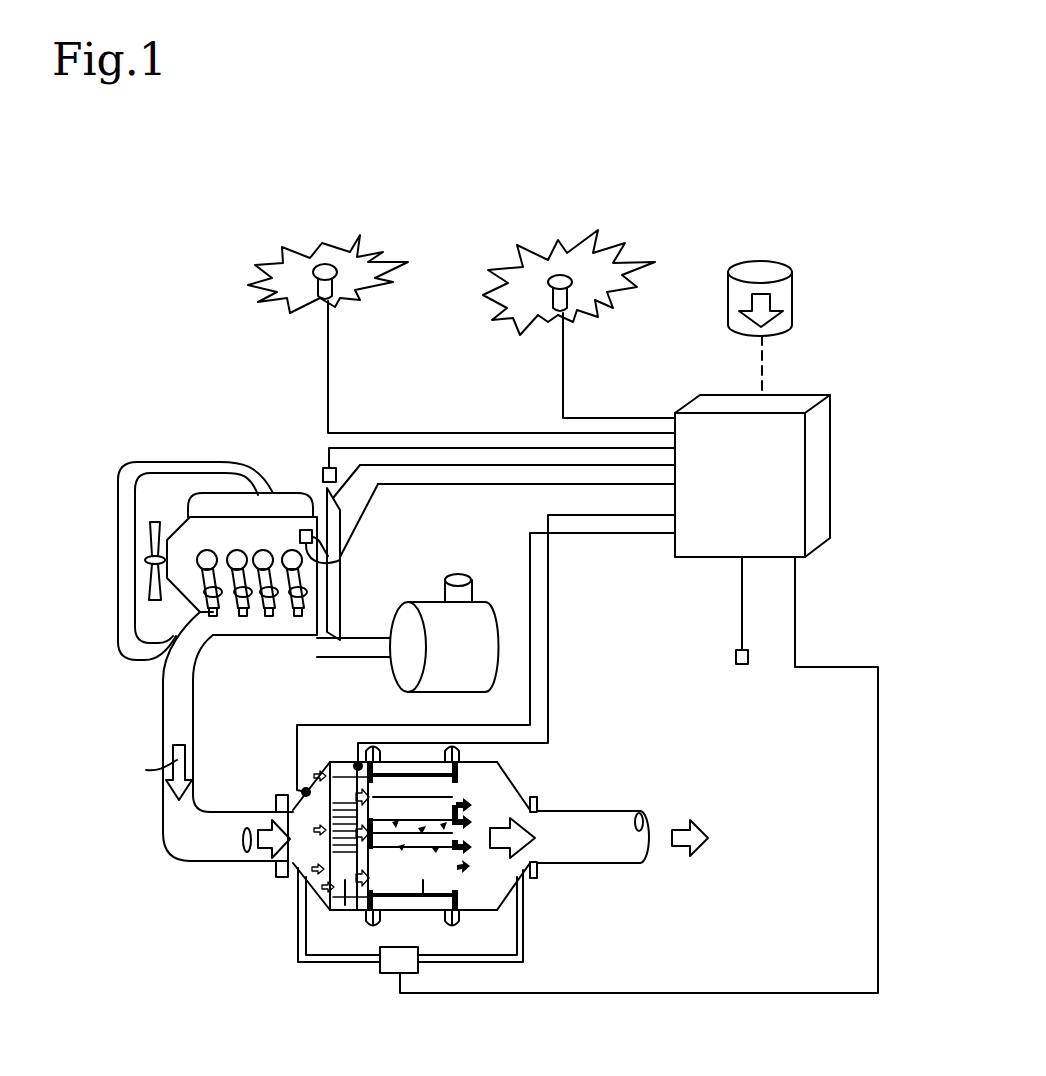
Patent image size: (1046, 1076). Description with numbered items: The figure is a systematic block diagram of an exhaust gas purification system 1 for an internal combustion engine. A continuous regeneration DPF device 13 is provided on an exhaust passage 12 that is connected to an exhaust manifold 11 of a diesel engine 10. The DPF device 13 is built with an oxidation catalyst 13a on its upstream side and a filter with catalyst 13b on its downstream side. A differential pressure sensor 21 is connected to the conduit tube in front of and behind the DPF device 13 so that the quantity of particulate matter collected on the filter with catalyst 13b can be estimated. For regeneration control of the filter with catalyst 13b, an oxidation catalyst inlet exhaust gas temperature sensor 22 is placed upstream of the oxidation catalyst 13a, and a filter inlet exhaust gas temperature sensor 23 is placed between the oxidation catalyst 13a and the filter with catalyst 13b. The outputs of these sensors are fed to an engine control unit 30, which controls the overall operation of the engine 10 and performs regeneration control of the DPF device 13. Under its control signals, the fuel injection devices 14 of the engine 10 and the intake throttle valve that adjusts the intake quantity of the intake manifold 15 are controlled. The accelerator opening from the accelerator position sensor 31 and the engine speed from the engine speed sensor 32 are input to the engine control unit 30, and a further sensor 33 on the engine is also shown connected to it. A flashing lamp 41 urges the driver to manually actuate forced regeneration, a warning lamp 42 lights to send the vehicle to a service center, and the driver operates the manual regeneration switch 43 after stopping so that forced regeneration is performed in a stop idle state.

The exhaust gas purification system 1 is at (698, 293).
The diesel engine 10 is at (180, 522).
The exhaust manifold 11 is at (147, 651).
The exhaust passage 12 is at (193, 848).
The continuous regeneration DPF device 13 is at (513, 782).
The oxidation catalyst 13a is at (346, 882).
The filter with catalyst 13b is at (424, 880).
The fuel injection devices 14 is at (170, 578).
The intake manifold 15 is at (282, 505).
The differential pressure sensor 21 is at (394, 963).
The oxidation catalyst inlet exhaust gas temperature sensor 22 is at (300, 790).
The filter inlet exhaust gas temperature sensor 23 is at (352, 762).
The engine control unit 30 is at (823, 472).
The accelerator position sensor 31 is at (742, 665).
The engine speed sensor 32 is at (327, 469).
The sensor 33 is at (330, 550).
The flashing lamp 41 is at (326, 264).
The warning lamp 42 is at (562, 275).
The manual regeneration switch 43 is at (772, 268).